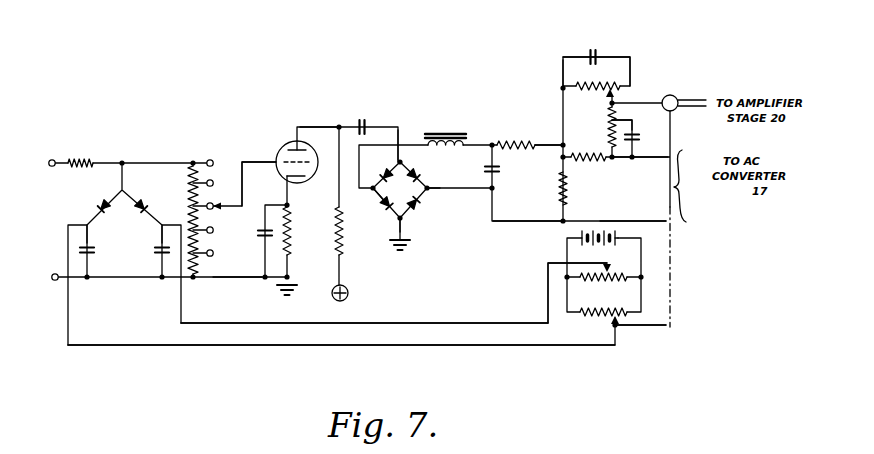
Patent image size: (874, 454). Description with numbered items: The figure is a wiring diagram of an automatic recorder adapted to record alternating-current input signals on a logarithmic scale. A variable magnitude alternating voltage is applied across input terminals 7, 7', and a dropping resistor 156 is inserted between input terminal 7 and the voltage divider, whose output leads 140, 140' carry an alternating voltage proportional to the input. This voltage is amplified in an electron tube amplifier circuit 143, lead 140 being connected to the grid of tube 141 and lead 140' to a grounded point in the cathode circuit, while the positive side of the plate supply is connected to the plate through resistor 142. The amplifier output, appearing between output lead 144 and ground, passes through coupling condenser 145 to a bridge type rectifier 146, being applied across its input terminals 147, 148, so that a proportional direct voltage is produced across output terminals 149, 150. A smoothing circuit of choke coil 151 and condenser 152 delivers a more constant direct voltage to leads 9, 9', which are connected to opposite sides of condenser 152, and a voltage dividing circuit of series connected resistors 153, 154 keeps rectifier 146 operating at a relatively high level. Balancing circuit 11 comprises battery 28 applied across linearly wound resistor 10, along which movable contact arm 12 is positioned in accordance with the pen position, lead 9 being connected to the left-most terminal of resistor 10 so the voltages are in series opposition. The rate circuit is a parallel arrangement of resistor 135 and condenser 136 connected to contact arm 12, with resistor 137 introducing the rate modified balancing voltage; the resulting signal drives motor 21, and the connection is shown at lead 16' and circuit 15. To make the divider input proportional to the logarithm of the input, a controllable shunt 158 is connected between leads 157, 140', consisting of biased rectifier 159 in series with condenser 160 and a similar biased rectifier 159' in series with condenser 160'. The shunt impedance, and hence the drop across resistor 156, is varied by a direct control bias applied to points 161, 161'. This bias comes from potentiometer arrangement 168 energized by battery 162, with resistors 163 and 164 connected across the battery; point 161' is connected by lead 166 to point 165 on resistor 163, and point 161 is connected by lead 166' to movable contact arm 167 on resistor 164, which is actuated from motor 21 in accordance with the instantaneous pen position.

The input terminal 7 is at (42, 182).
The input terminal 7' is at (42, 267).
The lead 9 is at (546, 125).
The lead 9' is at (527, 206).
The linearly wound resistor 10 is at (633, 160).
The balancing circuit 11 is at (668, 75).
The movable contact arm 12 is at (608, 94).
The detector circuit 15 is at (660, 138).
The conductor 16' is at (633, 208).
The motor 21 is at (678, 99).
The battery 28 is at (599, 52).
The resistor 135 is at (608, 134).
The condenser 136 is at (640, 141).
The resistor 137 is at (579, 161).
The output lead 140 is at (259, 167).
The output lead 140' is at (242, 294).
The tube 141 is at (297, 184).
The resistor 142 is at (344, 242).
The electron tube amplifier circuit 143 is at (316, 115).
The output lead 144 is at (344, 122).
The coupling condenser 145 is at (369, 126).
The bridge type rectifier 146 is at (417, 202).
The input terminal 147 is at (402, 160).
The input terminal 148 is at (403, 221).
The output terminal 149 is at (372, 196).
The output terminal 150 is at (429, 191).
The choke coil 151 is at (443, 149).
The condenser 152 is at (497, 172).
The resistor 153 is at (510, 141).
The resistor 154 is at (568, 193).
The dropping resistor 156 is at (85, 160).
The lead 157 is at (176, 161).
The controllable shunt 158 is at (138, 243).
The biased rectifier 159 is at (92, 192).
The biased rectifier 159' is at (155, 191).
The condenser 160 is at (109, 262).
The condenser 160' is at (145, 279).
The point 161 is at (67, 222).
The point 161' is at (179, 219).
The battery 162 is at (609, 243).
The resistor 163 is at (580, 283).
The resistor 164 is at (588, 317).
The point 165 is at (612, 273).
The lead 166 is at (364, 309).
The lead 166' is at (341, 364).
The movable contact arm 167 is at (616, 333).
The potentiometer arrangement 168 is at (552, 265).